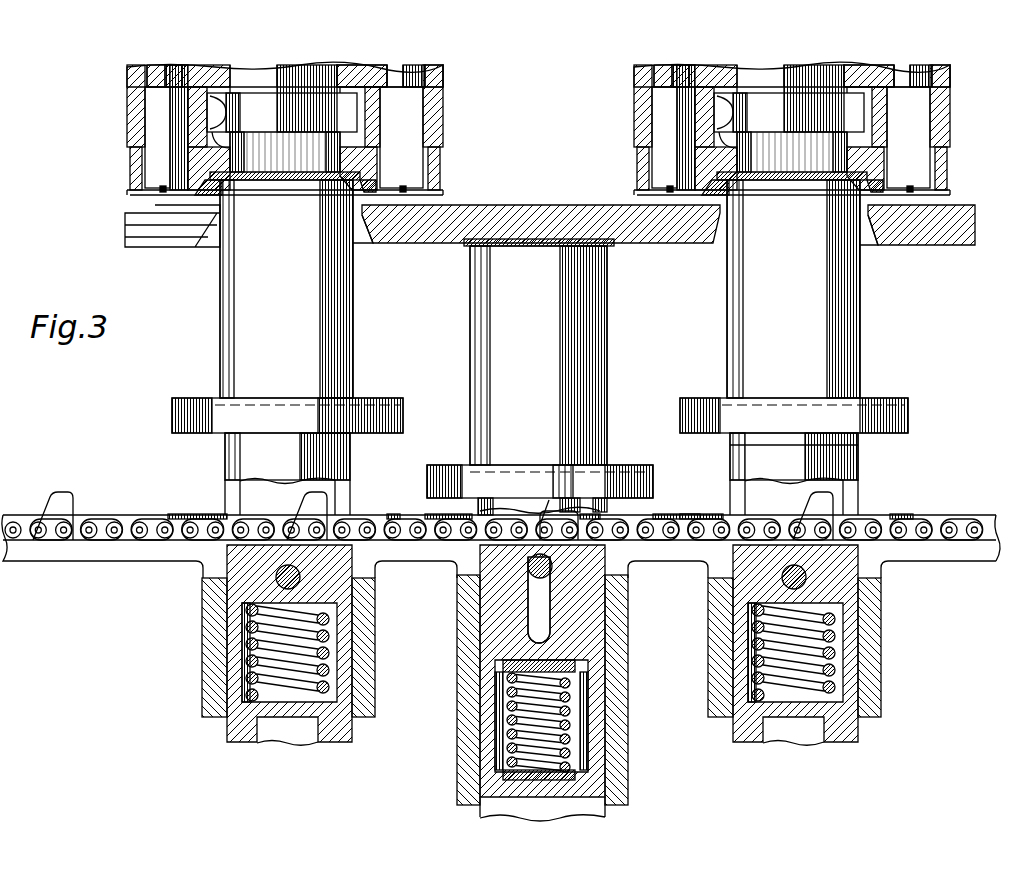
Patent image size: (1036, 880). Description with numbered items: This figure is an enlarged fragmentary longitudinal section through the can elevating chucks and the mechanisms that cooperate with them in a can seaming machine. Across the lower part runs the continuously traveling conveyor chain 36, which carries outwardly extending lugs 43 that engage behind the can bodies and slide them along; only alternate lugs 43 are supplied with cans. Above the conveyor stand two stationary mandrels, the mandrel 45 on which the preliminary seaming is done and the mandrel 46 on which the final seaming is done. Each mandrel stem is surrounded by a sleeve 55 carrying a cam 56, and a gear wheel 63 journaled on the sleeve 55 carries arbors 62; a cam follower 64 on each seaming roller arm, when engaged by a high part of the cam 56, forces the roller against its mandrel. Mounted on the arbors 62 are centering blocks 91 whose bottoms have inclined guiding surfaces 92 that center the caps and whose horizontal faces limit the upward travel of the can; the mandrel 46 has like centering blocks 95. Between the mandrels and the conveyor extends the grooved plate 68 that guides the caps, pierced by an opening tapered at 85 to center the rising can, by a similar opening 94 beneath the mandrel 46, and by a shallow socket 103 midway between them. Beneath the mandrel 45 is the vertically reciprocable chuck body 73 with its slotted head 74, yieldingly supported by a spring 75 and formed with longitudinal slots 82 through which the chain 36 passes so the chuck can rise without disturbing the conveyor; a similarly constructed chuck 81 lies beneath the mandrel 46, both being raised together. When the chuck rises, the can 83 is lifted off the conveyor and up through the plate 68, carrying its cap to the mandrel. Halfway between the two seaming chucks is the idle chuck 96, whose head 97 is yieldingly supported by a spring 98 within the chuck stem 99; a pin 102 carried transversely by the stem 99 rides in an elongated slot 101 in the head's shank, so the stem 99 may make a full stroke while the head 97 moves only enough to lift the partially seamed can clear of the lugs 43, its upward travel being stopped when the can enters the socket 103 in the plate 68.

The conveyor chain 36 is at (974, 521).
The lugs 43 is at (70, 494).
The mandrel 45 is at (285, 129).
The mandrel 46 is at (792, 129).
The sleeve 55 is at (261, 76).
The cam 56 is at (308, 102).
The arbor 62 is at (152, 115).
The gear wheel 63 is at (360, 68).
The cam follower 64 is at (214, 112).
The grooved plate 68 is at (514, 205).
The chuck body 73 is at (351, 469).
The slotted head 74 is at (398, 408).
The spring 75 is at (322, 641).
The chuck 81 is at (859, 455).
The longitudinal slots 82 is at (228, 495).
The can 83 is at (352, 326).
The tapered portion 85 is at (368, 243).
The centering blocks 91 is at (192, 158).
The inclined guiding surfaces 92 is at (372, 190).
The opening 94 is at (870, 243).
The centering blocks 95 is at (705, 158).
The idle chuck 96 is at (596, 511).
The head 97 is at (632, 472).
The spring 98 is at (560, 716).
The chuck stem 99 is at (596, 752).
The elongated slot 101 is at (550, 620).
The pin 102 is at (549, 574).
The shallow socket 103 is at (614, 246).